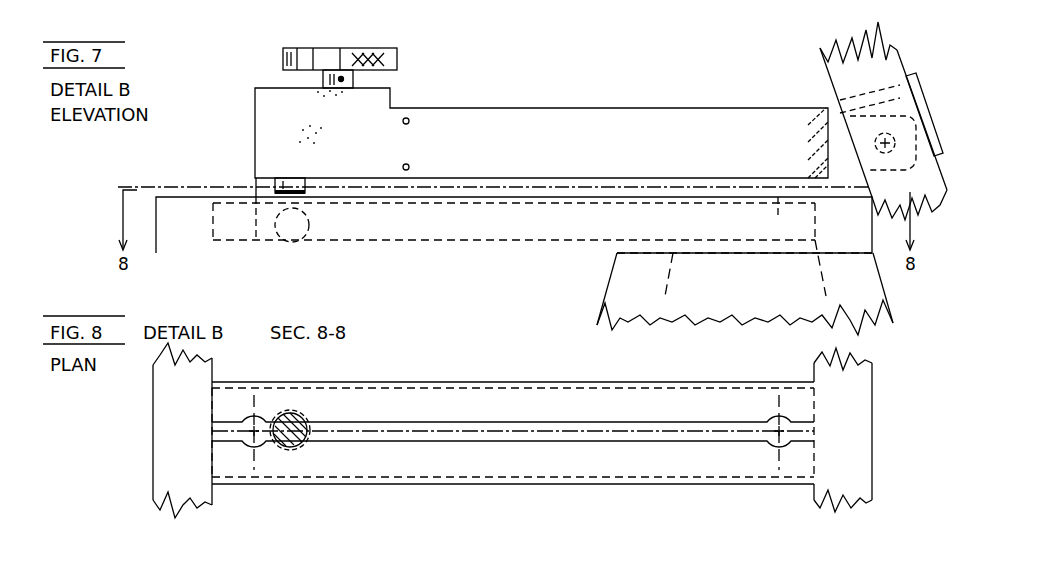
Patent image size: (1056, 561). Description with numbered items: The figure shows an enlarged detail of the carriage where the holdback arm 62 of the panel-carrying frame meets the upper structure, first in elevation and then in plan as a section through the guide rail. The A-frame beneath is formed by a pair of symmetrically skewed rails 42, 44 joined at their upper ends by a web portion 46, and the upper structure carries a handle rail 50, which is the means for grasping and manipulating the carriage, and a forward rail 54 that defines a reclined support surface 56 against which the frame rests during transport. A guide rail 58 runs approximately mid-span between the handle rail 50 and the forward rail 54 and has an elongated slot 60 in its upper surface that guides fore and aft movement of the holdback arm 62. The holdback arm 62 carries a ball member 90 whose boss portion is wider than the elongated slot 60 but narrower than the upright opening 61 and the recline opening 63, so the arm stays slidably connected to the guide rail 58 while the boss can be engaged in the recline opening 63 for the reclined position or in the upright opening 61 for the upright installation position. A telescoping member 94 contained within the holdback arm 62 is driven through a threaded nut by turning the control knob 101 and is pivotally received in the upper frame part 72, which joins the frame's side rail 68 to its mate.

In FIG. 7, the skewed rail 42 is at (853, 292).
In FIG. 7, the skewed rail 44 is at (633, 292).
In FIG. 7, the web portion 46 is at (745, 287).
In FIG. 7, the handle rail 50 is at (183, 196).
In FIG. 8, the handle rail 50 is at (182, 462).
In FIG. 7, the forward rail 54 is at (873, 242).
In FIG. 8, the forward rail 54 is at (843, 458).
In FIG. 7, the reclined support surface 56 is at (873, 200).
In FIG. 8, the reclined support surface 56 is at (872, 402).
In FIG. 7, the guide rail 58 is at (502, 242).
In FIG. 8, the guide rail 58 is at (447, 405).
In FIG. 8, the elongated slot 60 is at (517, 430).
In FIG. 8, the upright opening 61 is at (777, 445).
In FIG. 7, the holdback arm 62 is at (540, 105).
In FIG. 8, the recline opening 63 is at (257, 445).
In FIG. 7, the side rail 68 is at (868, 77).
In FIG. 7, the upper frame part 72 is at (925, 115).
In FIG. 7, the ball member 90 is at (268, 227).
In FIG. 8, the ball member 90 is at (300, 448).
In FIG. 7, the telescoping member 94 is at (843, 145).
In FIG. 7, the control knob 101 is at (397, 59).